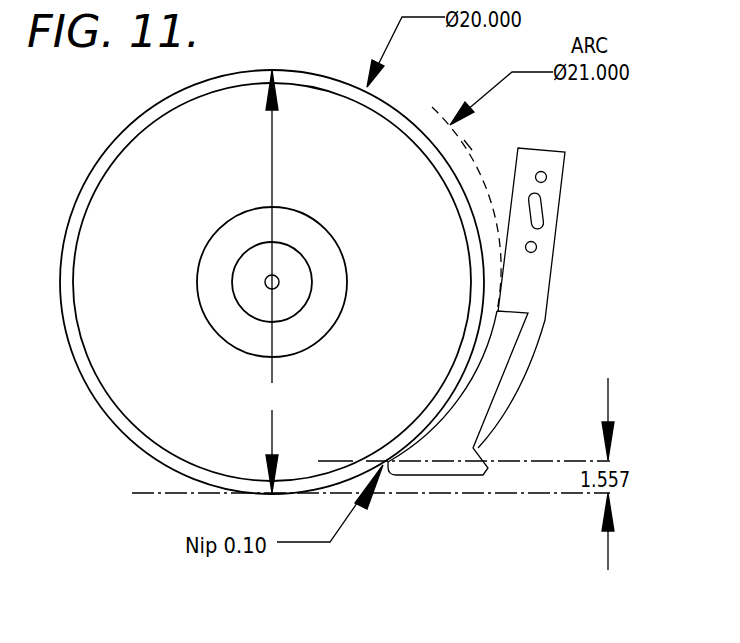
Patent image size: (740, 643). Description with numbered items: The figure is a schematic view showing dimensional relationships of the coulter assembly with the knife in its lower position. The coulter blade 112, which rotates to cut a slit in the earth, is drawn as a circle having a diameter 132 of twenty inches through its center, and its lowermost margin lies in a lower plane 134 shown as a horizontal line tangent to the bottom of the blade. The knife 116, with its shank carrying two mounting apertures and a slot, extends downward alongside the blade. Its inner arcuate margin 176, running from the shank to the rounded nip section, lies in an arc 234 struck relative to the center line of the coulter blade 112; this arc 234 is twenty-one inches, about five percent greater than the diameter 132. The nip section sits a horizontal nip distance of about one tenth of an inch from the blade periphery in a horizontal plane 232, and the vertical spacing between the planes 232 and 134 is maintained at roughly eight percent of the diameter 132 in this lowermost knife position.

The coulter blade 112 is at (78, 178).
The knife 116 is at (587, 218).
The diameter 132 is at (273, 281).
The lower plane 134 is at (148, 493).
The inner arcuate margin 176 is at (479, 365).
The horizontal plane 232 is at (340, 459).
The arc 234 is at (470, 146).